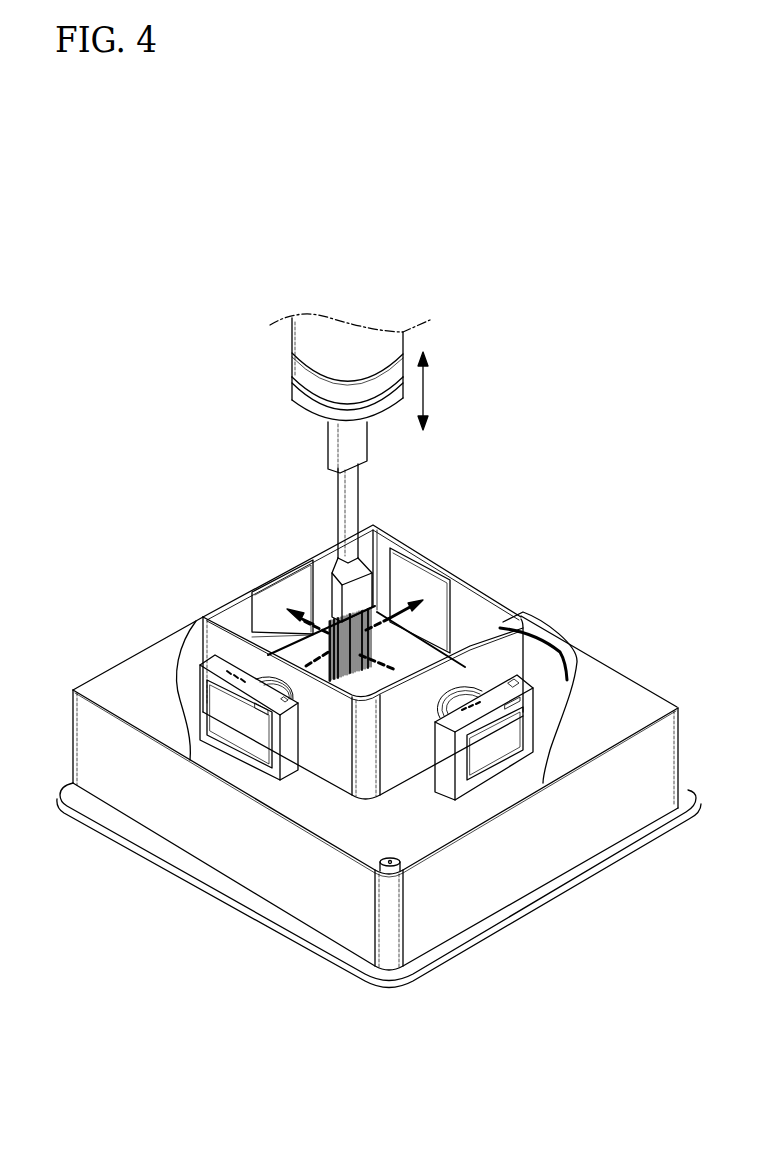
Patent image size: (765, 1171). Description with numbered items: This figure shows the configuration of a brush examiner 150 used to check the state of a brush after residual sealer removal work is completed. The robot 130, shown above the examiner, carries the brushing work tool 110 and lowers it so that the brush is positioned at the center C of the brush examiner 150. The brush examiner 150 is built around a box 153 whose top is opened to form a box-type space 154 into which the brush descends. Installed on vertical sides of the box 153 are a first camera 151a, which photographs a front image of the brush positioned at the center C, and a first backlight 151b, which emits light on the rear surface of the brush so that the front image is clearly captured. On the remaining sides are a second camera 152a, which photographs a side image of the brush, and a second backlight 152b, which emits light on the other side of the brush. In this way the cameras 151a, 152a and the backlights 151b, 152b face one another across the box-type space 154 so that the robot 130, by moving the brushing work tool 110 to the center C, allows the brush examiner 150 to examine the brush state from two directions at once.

The brushing work tool 110 is at (292, 397).
The robot 130 is at (346, 337).
The brush examiner 150 is at (607, 637).
The first camera 151a is at (503, 690).
The first backlight 151b is at (300, 593).
The second camera 152a is at (221, 665).
The second backlight 152b is at (410, 577).
The box 153 is at (240, 595).
The box-type space 154 is at (377, 653).
The center of the brush examiner C is at (343, 684).